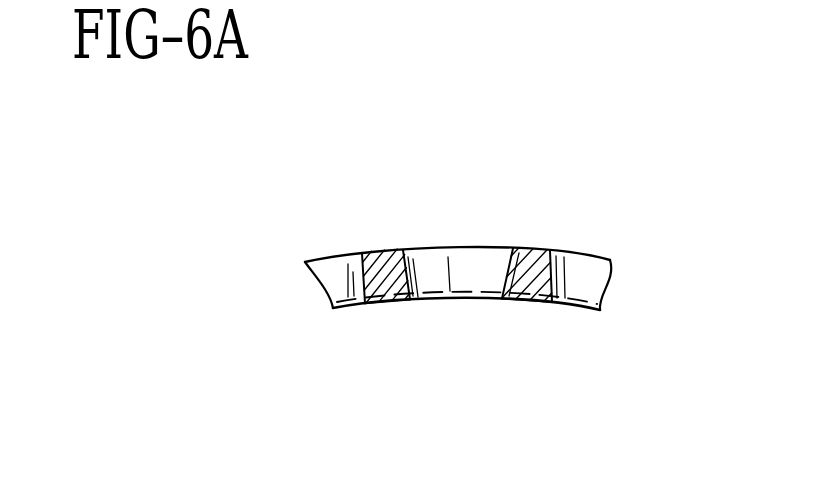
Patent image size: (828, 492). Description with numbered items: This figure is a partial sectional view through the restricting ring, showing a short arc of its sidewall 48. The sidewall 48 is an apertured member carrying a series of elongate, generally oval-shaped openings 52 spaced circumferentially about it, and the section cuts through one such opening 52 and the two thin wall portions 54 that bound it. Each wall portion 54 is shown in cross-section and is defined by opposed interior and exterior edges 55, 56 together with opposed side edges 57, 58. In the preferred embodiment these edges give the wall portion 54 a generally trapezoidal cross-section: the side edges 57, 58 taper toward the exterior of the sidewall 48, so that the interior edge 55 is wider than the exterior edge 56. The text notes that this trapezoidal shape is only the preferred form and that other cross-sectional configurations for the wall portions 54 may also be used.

The sidewall 48 is at (327, 281).
The openings 52 is at (479, 289).
The wall portion 54 is at (537, 292).
The interior edge 55 is at (383, 301).
The exterior edge 56 is at (382, 250).
The side edge 57 is at (506, 278).
The side edge 58 is at (565, 276).